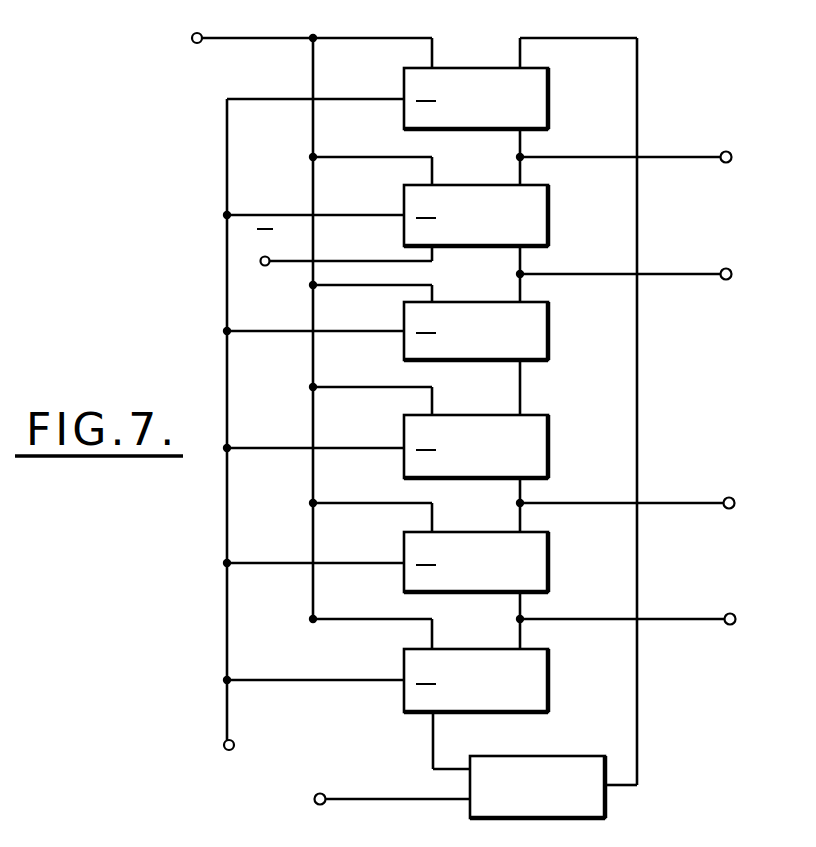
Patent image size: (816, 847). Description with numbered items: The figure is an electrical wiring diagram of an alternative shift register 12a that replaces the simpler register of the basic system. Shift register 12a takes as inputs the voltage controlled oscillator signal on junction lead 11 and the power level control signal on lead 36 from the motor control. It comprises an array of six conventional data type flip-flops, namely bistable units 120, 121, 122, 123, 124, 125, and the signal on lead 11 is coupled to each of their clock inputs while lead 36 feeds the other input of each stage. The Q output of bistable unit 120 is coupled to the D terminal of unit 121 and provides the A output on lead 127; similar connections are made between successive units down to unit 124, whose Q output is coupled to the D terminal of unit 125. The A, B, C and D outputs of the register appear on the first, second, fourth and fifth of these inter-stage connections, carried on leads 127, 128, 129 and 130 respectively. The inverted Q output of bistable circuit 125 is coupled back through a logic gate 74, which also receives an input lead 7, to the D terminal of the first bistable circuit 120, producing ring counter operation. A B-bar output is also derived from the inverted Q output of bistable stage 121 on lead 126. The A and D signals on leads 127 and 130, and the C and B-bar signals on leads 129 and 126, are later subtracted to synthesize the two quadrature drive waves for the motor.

The input lead 7 is at (376, 798).
The junction lead 11 is at (240, 40).
The shift register 12a is at (664, 78).
The lead 36 is at (227, 712).
The logic gate 74 is at (578, 756).
The bistable unit 120 is at (478, 68).
The bistable unit 121 is at (468, 185).
The bistable unit 122 is at (471, 302).
The bistable unit 123 is at (470, 415).
The bistable unit 124 is at (475, 532).
The bistable unit 125 is at (474, 649).
The lead 126 is at (268, 266).
The lead 127 is at (685, 160).
The lead 128 is at (685, 277).
The lead 129 is at (694, 506).
The lead 130 is at (694, 622).